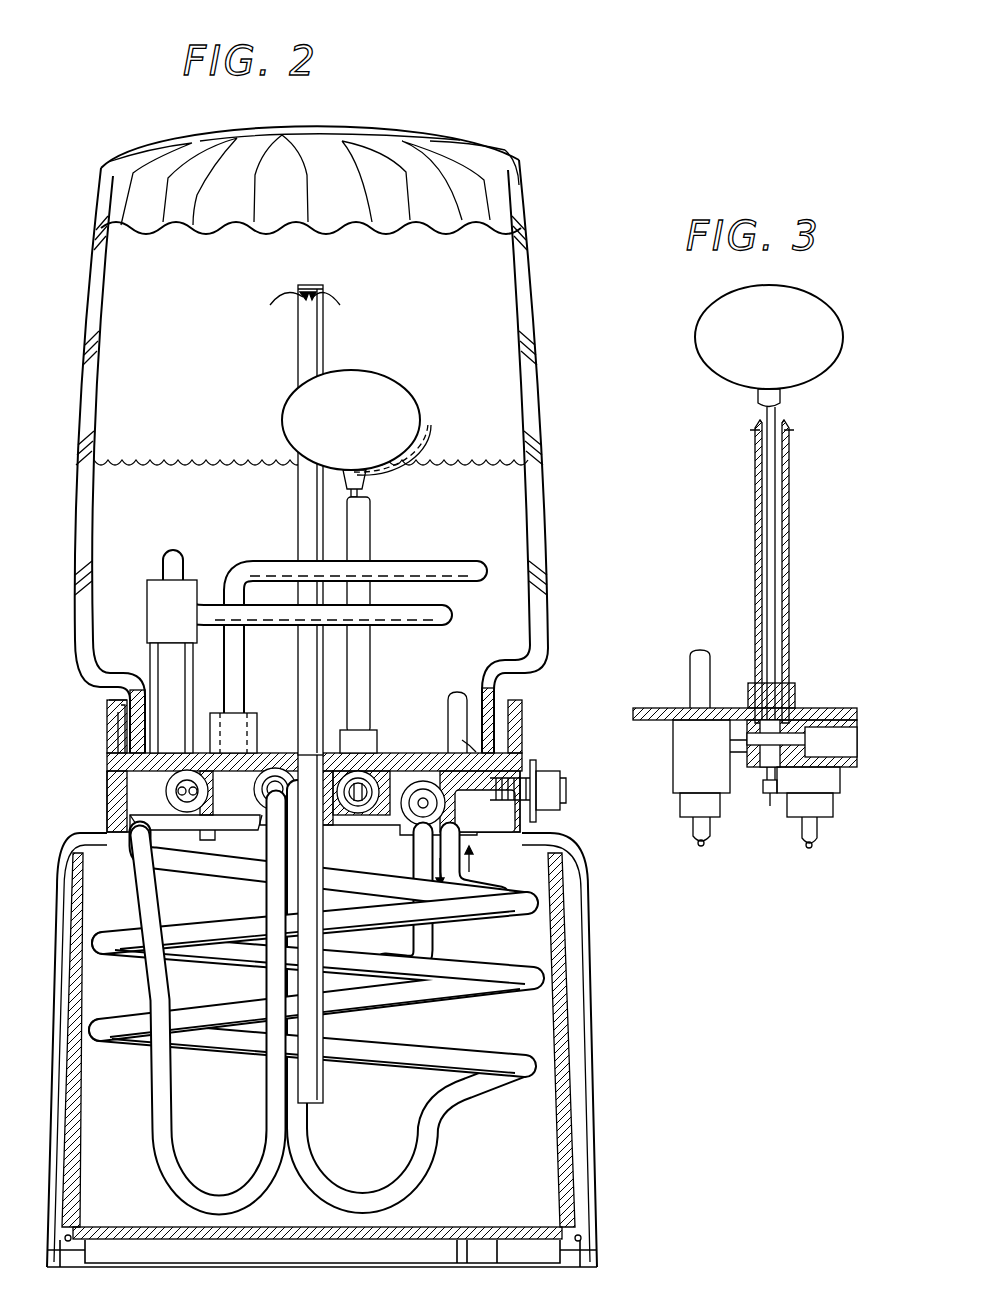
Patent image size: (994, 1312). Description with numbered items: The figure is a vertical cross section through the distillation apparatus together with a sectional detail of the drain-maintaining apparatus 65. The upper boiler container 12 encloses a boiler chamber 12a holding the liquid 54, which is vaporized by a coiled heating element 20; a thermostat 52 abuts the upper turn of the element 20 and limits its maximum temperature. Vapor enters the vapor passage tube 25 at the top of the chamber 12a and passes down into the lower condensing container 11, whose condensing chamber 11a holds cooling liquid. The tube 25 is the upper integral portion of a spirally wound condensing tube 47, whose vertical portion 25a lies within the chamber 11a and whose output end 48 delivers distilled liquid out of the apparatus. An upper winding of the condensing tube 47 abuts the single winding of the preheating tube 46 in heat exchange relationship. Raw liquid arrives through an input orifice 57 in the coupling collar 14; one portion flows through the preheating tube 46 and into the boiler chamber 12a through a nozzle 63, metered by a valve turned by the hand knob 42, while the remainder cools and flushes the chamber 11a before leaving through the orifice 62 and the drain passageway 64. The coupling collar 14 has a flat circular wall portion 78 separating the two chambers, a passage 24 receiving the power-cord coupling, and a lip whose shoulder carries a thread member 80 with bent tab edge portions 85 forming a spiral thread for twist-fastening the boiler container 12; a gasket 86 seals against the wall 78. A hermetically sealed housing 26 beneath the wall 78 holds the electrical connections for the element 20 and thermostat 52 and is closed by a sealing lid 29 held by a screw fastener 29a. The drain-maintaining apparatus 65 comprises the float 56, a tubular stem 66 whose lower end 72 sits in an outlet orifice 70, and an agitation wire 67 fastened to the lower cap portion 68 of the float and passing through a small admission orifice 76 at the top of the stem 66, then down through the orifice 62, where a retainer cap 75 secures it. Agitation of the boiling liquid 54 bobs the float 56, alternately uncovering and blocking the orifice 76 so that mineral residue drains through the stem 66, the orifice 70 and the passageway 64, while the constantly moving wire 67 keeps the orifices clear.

In FIG. 2, the lower condensing container 11 is at (583, 1041).
In FIG. 2, the condensing chamber 11a is at (496, 1139).
In FIG. 3, the condensing chamber 11a is at (805, 845).
In FIG. 2, the boiler container 12 is at (540, 333).
In FIG. 2, the boiler chamber 12a is at (178, 322).
In FIG. 2, the coupling collar 14 is at (100, 791).
In FIG. 3, the coupling collar 14 is at (838, 708).
In FIG. 2, the heating element 20 is at (272, 560).
In FIG. 2, the passage 24 is at (176, 790).
In FIG. 2, the vapor passage tube 25 is at (324, 328).
In FIG. 2, the condensing tube portion 25a is at (330, 1036).
In FIG. 2, the hermetically sealed housing 26 is at (125, 812).
In FIG. 2, the sealing lid 29 is at (148, 858).
In FIG. 2, the screw fastener 29a is at (200, 880).
In FIG. 2, the hand knob 42 is at (562, 795).
In FIG. 2, the preheating tube 46 is at (460, 880).
In FIG. 3, the preheating tube 46 is at (710, 842).
In FIG. 2, the condensing tube 47 is at (470, 1012).
In FIG. 2, the output end 48 is at (262, 793).
In FIG. 2, the thermostat 52 is at (147, 592).
In FIG. 2, the liquid 54 is at (311, 484).
In FIG. 2, the float 56 is at (424, 410).
In FIG. 3, the float 56 is at (716, 298).
In FIG. 2, the input orifice 57 is at (430, 780).
In FIG. 3, the orifice 62 is at (763, 786).
In FIG. 2, the nozzle 63 is at (447, 700).
In FIG. 3, the nozzle 63 is at (690, 684).
In FIG. 3, the drain passageway 64 is at (830, 740).
In FIG. 2, the drain-maintaining apparatus 65 is at (378, 523).
In FIG. 3, the drain-maintaining apparatus 65 is at (748, 527).
In FIG. 3, the tubular stem 66 is at (755, 472).
In FIG. 3, the agitation wire 67 is at (776, 500).
In FIG. 3, the lower portion of float 68 is at (783, 398).
In FIG. 3, the outlet orifice 70 is at (765, 735).
In FIG. 3, the lower end of stem 72 is at (752, 690).
In FIG. 2, the retainer cap 75 is at (118, 698).
In FIG. 3, the retainer cap 75 is at (767, 795).
In FIG. 3, the admission orifice 76 is at (758, 421).
In FIG. 2, the wall portion 78 is at (246, 752).
In FIG. 2, the thread member 80 is at (118, 740).
In FIG. 2, the tab edge portions 85 is at (120, 714).
In FIG. 2, the gasket 86 is at (458, 738).